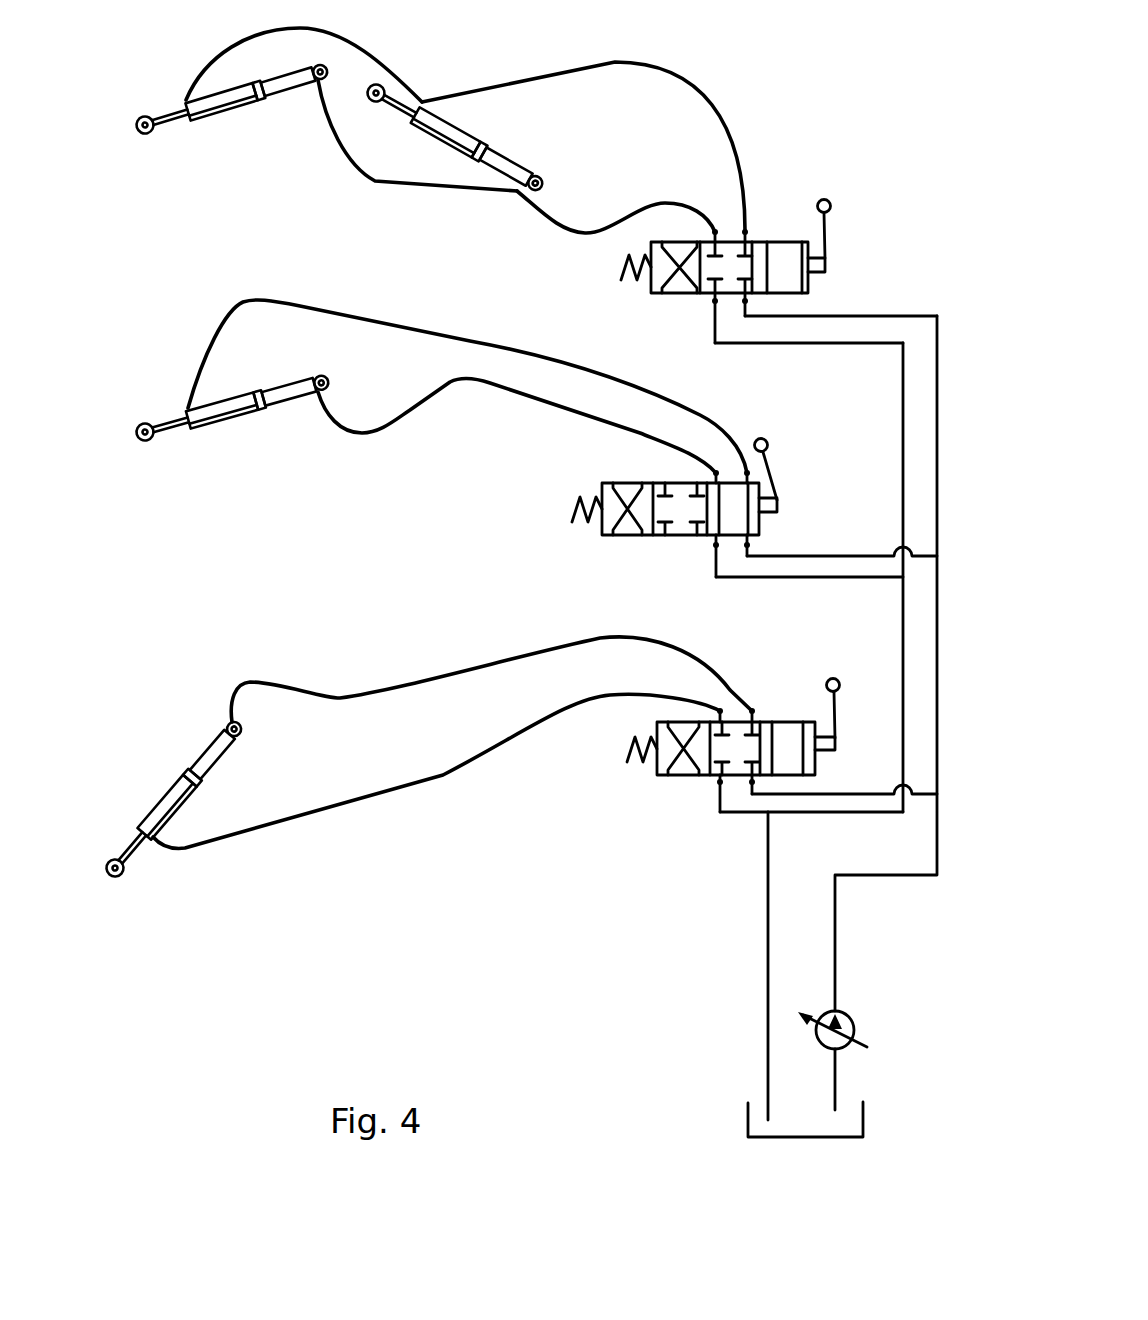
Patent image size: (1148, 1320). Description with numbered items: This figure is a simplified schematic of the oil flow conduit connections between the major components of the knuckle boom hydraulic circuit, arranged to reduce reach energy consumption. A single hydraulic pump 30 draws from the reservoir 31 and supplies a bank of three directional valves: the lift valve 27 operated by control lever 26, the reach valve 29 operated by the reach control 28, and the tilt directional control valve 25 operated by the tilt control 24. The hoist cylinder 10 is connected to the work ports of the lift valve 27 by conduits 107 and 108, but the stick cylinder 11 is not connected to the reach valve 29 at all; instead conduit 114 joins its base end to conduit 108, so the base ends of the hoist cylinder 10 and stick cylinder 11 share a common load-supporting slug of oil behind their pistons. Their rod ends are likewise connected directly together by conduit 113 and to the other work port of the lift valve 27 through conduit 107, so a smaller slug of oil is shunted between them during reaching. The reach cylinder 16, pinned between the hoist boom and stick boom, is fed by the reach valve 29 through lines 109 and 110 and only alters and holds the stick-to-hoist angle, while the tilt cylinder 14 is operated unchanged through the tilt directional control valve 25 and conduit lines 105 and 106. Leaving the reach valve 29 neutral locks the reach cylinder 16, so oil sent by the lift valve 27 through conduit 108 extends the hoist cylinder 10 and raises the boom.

The hoist cylinder 10 is at (503, 152).
The stick cylinder 11 is at (236, 110).
The tilt cylinder 14 is at (133, 853).
The reach cylinder 16 is at (222, 420).
The tilt control 24 is at (830, 713).
The tilt directional control valve 25 is at (677, 777).
The control lever 26 is at (830, 223).
The lift valve 27 is at (660, 297).
The reach control 28 is at (773, 484).
The reach valve 29 is at (610, 538).
The hydraulic pump 30 is at (857, 1034).
The reservoir 31 is at (748, 1119).
The conduit line 105 is at (400, 680).
The conduit line 106 is at (377, 797).
The conduit 107 is at (718, 107).
The conduit 108 is at (562, 226).
The hydraulic line 109 is at (407, 320).
The hydraulic line 110 is at (640, 437).
The conduit 113 is at (368, 48).
The conduit 114 is at (363, 175).